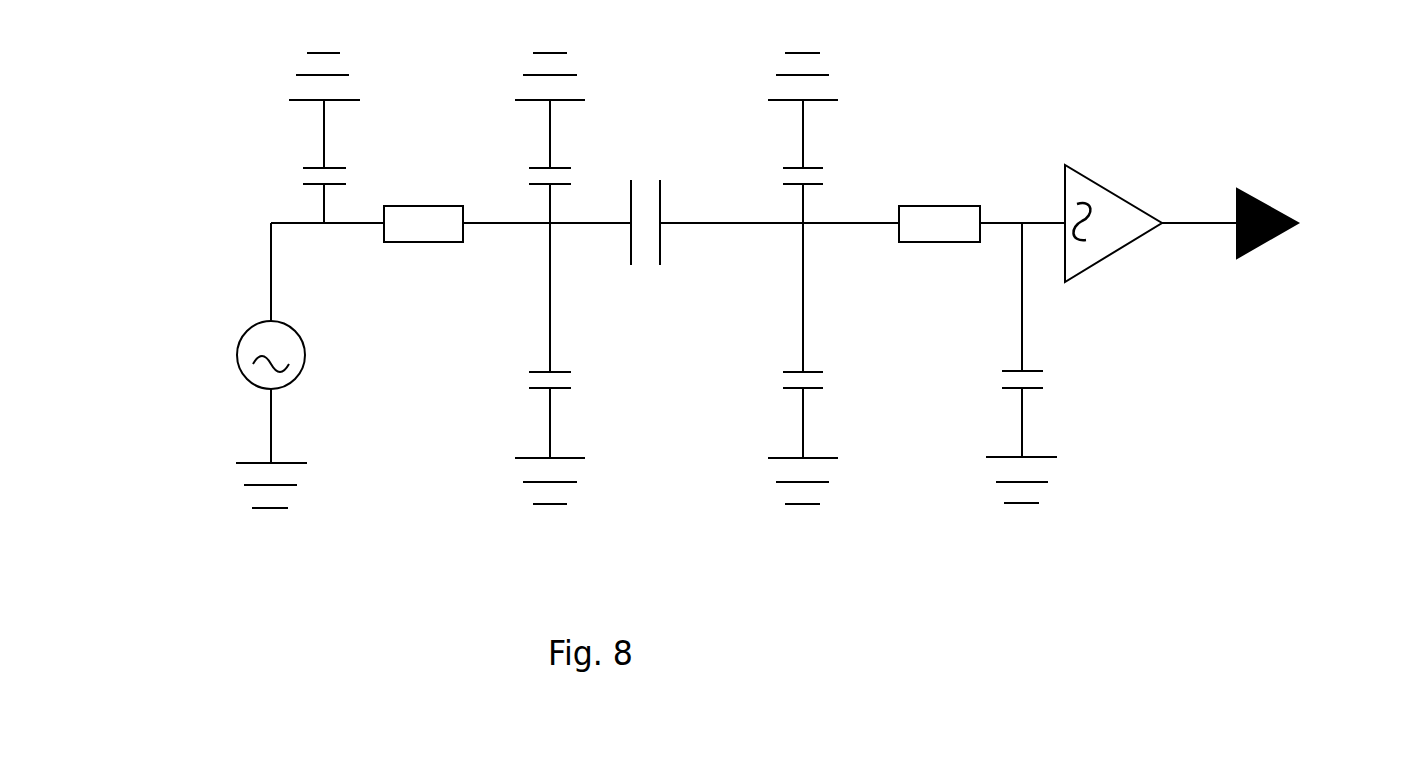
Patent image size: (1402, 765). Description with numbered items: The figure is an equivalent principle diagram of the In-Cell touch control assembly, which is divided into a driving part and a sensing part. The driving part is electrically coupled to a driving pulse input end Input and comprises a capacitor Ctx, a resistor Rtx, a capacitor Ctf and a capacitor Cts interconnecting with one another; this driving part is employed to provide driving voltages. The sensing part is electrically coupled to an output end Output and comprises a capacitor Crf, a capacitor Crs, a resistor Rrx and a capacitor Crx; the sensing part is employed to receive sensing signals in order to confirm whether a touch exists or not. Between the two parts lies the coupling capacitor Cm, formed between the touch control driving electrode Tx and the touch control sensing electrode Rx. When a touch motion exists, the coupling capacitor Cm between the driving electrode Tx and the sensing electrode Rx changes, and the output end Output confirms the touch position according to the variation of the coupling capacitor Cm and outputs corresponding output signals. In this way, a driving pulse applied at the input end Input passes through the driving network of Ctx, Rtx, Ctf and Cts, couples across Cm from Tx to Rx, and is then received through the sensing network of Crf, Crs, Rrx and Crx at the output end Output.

The driving pulse input end Input is at (220, 419).
The capacitor Ctx is at (296, 138).
The resistor Rtx is at (423, 245).
The capacitor Ctf is at (527, 138).
The capacitor Cts is at (524, 363).
The coupling capacitor Cm is at (642, 199).
The touch control driving electrode Tx is at (606, 224).
The touch control sensing electrode Rx is at (688, 224).
The capacitor Crf is at (779, 138).
The capacitor Crs is at (777, 363).
The resistor Rrx is at (939, 242).
The capacitor Crx is at (1049, 363).
The output end Output is at (1306, 205).